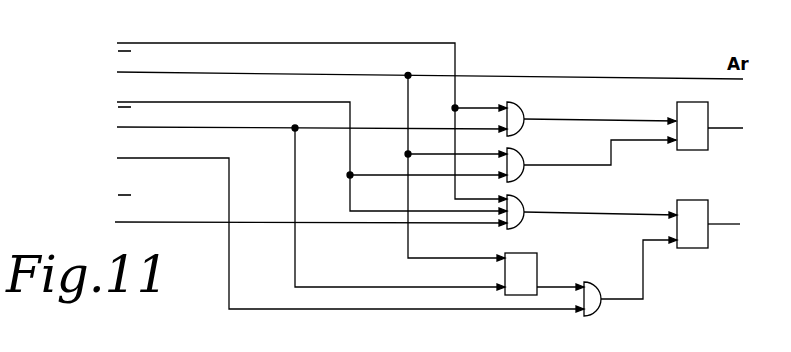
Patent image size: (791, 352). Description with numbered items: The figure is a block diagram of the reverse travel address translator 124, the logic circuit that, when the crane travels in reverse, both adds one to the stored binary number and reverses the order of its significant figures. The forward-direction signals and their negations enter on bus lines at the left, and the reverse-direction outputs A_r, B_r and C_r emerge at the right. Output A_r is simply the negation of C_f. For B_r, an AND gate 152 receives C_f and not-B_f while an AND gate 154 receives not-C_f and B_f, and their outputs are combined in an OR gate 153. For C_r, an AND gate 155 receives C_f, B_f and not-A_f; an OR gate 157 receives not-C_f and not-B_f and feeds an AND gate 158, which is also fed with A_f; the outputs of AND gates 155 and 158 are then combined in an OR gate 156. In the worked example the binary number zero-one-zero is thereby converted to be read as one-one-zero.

The reverse travel address translator 124 is at (336, 183).
The AND gate 152 is at (517, 114).
The OR gate 153 is at (679, 108).
The AND gate 154 is at (517, 160).
The AND gate 155 is at (517, 208).
The OR gate 156 is at (688, 205).
The OR gate 157 is at (517, 257).
The AND gate 158 is at (594, 297).